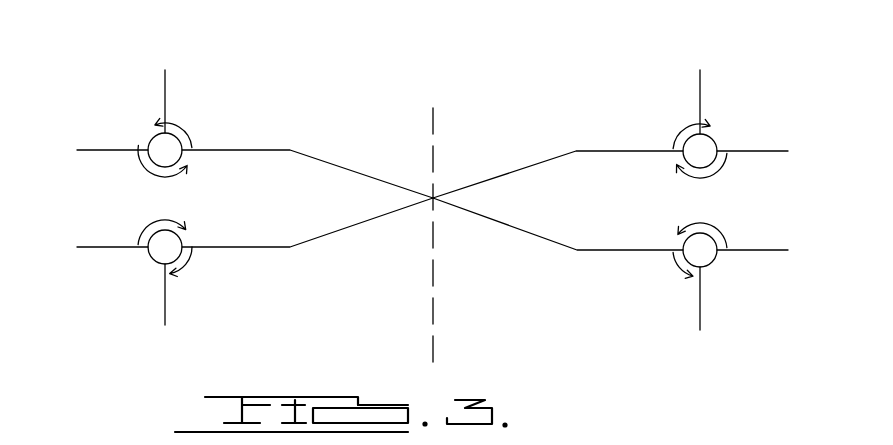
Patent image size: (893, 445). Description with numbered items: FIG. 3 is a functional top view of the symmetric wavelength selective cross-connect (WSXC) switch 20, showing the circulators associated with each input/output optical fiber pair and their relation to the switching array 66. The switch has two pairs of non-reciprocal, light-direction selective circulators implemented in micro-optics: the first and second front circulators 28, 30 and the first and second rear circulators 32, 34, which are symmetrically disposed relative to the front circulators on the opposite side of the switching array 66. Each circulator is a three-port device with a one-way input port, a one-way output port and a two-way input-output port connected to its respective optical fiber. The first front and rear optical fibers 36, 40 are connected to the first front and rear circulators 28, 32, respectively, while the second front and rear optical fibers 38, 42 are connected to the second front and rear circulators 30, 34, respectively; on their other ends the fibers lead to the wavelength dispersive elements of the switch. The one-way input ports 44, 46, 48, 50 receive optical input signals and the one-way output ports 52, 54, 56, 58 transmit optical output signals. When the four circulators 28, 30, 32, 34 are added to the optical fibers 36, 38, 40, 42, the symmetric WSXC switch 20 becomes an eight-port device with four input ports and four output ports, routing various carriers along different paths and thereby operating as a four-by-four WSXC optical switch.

The symmetric wavelength selective cross-connect (WSXC) switch 20 is at (540, 64).
The first front circulator 28 is at (152, 262).
The second front circulator 30 is at (715, 262).
The first rear circulator 32 is at (148, 138).
The second rear circulator 34 is at (717, 143).
The first front optical fiber 36 is at (290, 250).
The second front optical fiber 38 is at (578, 251).
The first rear optical fiber 40 is at (272, 149).
The second rear optical fiber 42 is at (598, 151).
The one-way input port 44 is at (90, 246).
The one-way input port 46 is at (787, 252).
The one-way input port 48 is at (83, 150).
The one-way input port 50 is at (787, 153).
The one-way output port 52 is at (165, 313).
The one-way output port 54 is at (700, 317).
The one-way output port 56 is at (165, 75).
The one-way output port 58 is at (700, 82).
The switching array 66 is at (433, 140).